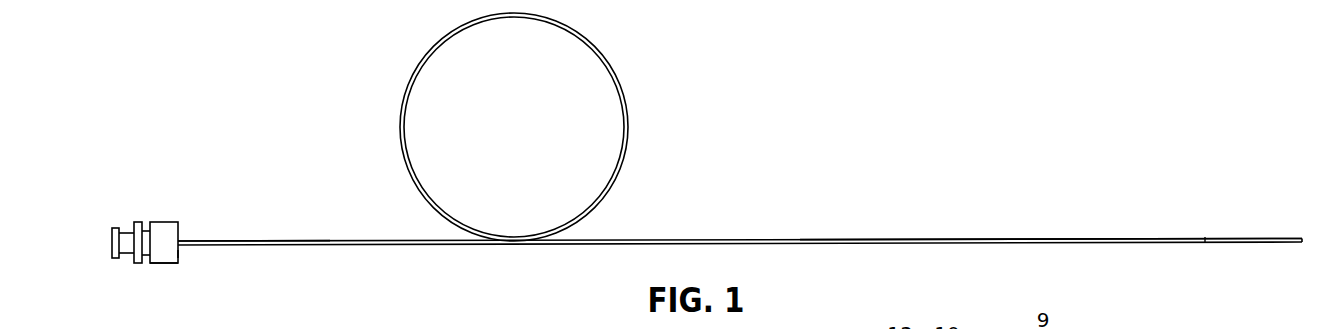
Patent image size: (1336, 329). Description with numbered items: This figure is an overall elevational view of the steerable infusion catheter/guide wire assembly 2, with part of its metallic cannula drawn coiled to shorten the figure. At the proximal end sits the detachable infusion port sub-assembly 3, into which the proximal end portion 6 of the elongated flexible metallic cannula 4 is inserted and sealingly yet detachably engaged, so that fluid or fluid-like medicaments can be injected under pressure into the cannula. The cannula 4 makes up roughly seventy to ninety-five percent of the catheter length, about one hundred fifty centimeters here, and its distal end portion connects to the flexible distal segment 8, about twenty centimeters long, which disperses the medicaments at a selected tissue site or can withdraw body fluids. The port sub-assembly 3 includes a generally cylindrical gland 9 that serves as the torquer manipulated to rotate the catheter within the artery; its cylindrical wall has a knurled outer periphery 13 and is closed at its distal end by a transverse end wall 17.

The steerable infusion catheter/guide wire assembly 2 is at (305, 219).
The detachable infusion port sub-assembly 3 is at (146, 203).
The elongated flexible metallic cannula 4 is at (606, 167).
The proximal end portion 6 is at (207, 237).
The flexible distal segment 8 is at (800, 235).
The gland 9 is at (172, 214).
The knurled outer periphery 13 is at (165, 263).
The transverse end wall 17 is at (178, 253).